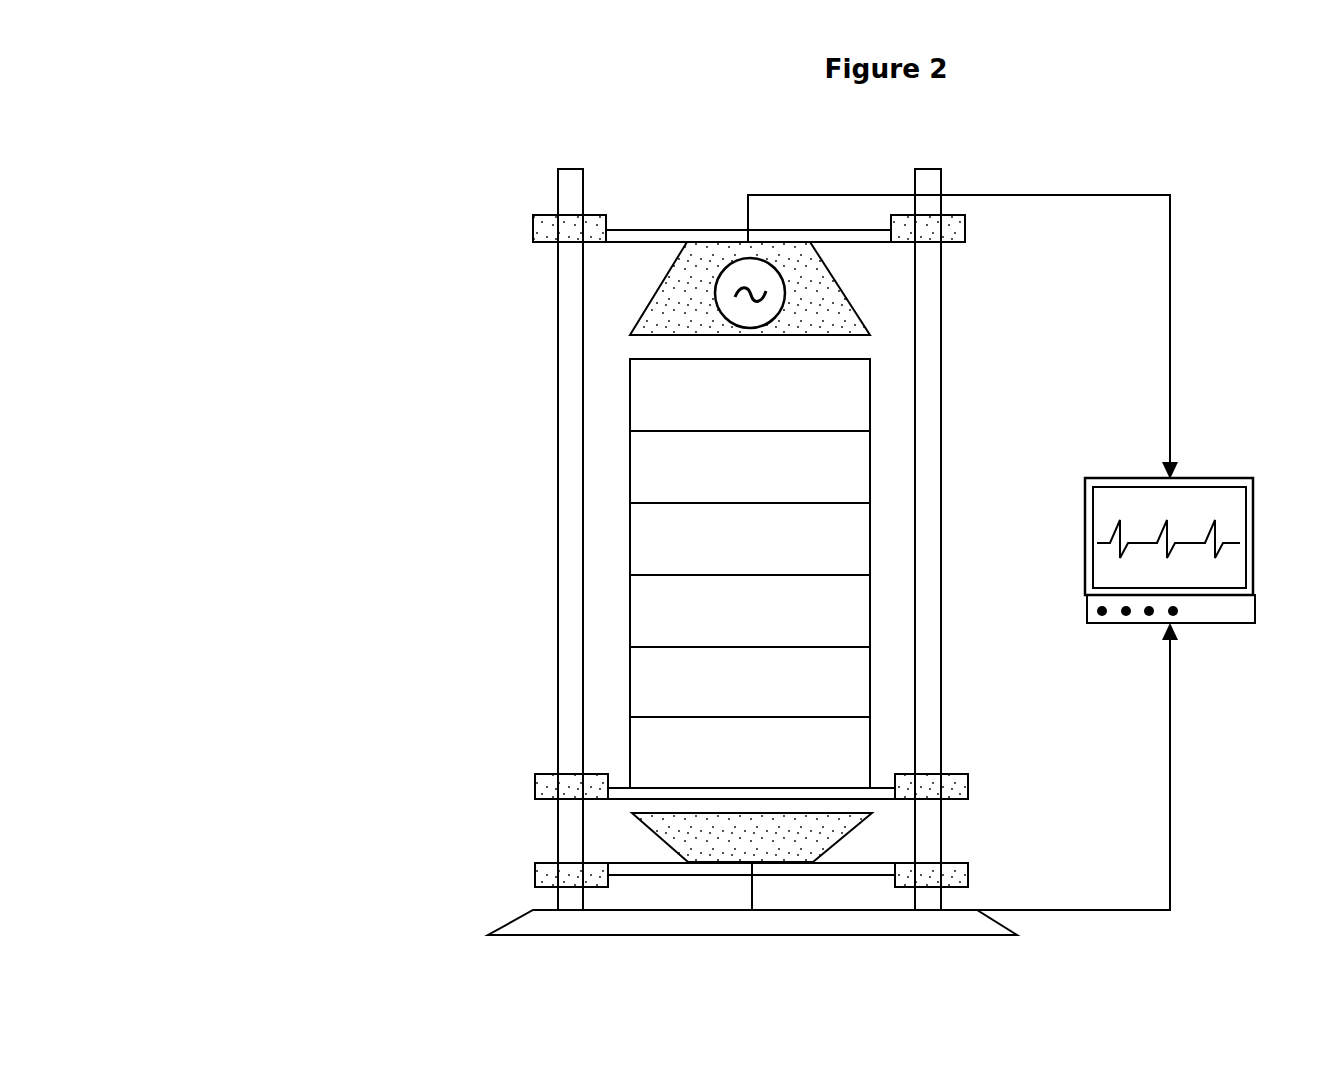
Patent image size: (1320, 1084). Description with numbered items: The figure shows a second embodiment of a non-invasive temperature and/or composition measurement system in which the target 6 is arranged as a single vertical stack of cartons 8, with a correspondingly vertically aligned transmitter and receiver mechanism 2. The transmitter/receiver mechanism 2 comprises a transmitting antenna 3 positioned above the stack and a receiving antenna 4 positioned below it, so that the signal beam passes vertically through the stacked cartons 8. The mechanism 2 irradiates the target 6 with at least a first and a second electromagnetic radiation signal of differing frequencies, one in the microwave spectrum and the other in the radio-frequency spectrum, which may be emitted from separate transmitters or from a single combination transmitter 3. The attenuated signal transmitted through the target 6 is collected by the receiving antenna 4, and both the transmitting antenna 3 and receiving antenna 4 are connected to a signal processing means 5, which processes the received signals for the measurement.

The transmitter and receiver mechanism 2 is at (330, 838).
The transmitting antenna 3 is at (552, 323).
The receiving antenna 4 is at (522, 840).
The signal processing means 5 is at (978, 532).
The target 6 is at (618, 608).
The cartons 8 is at (506, 409).